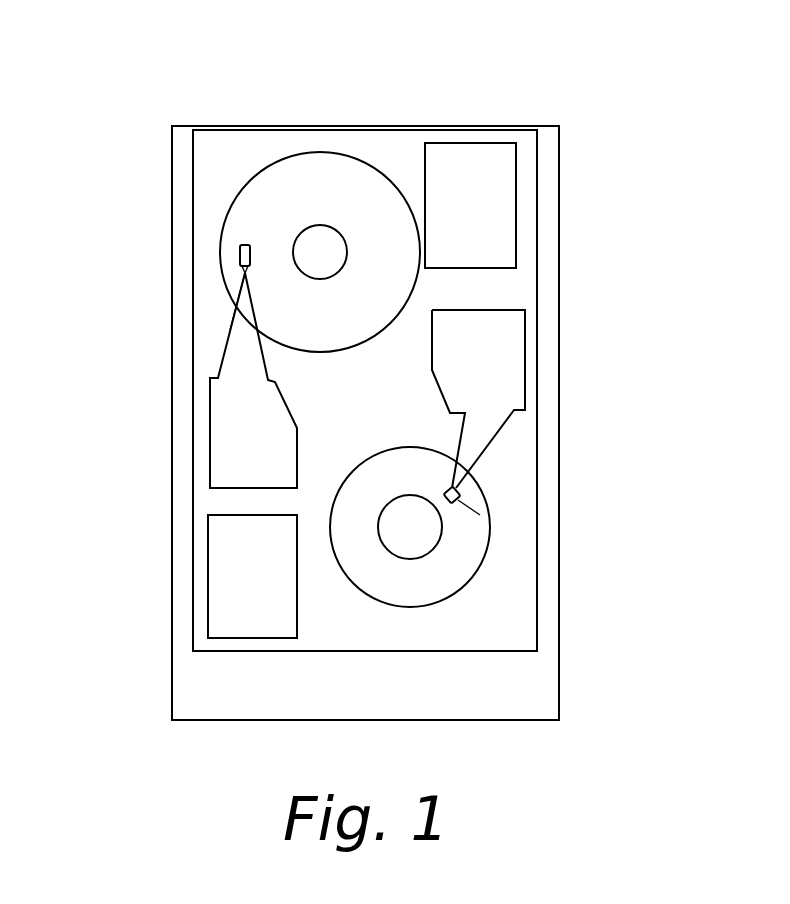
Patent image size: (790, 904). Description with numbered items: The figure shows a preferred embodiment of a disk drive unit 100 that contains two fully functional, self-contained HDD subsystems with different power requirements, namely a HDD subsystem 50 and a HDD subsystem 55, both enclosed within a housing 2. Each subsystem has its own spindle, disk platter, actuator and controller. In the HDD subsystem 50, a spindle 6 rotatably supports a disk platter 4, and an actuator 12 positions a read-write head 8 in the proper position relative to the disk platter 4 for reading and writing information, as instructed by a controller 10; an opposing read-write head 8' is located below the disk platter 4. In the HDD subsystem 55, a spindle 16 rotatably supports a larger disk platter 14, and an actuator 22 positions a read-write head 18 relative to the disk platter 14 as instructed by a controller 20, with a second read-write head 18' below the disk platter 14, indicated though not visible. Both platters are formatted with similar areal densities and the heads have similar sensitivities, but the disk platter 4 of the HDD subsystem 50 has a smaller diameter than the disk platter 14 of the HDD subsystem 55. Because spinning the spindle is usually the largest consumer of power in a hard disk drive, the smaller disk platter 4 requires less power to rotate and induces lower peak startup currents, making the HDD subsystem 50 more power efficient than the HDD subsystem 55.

The disk drive unit 100 is at (699, 41).
The housing 2 is at (525, 697).
The disk platter 4 is at (428, 593).
The spindle 6 is at (430, 538).
The read-write head 8 is at (536, 514).
The read-write head 8' is at (538, 491).
The controller 10 is at (235, 585).
The actuator 12 is at (505, 345).
The disk platter 14 is at (252, 170).
The spindle 16 is at (318, 226).
The read-write head 18 is at (177, 257).
The read-write head 18' is at (168, 305).
The controller 20 is at (488, 193).
The actuator 22 is at (230, 437).
The HDD subsystem 50 is at (665, 492).
The HDD subsystem 55 is at (135, 203).